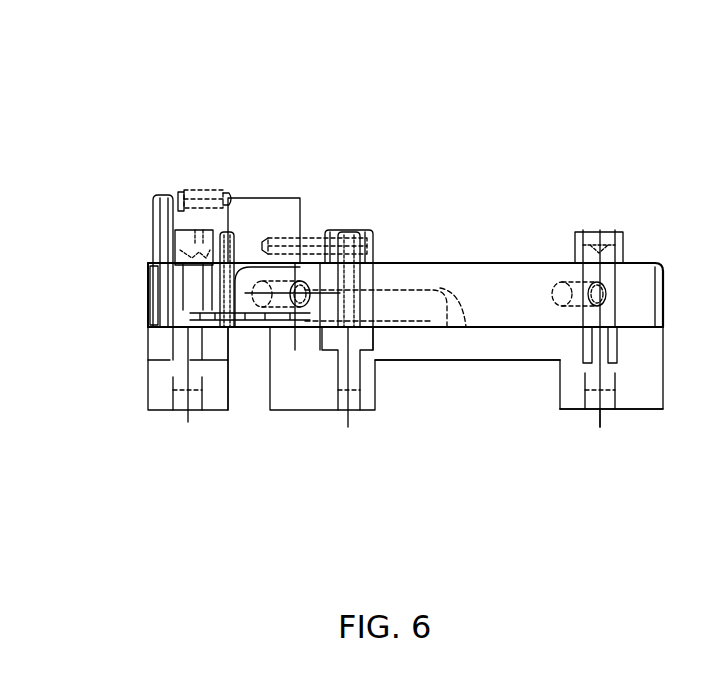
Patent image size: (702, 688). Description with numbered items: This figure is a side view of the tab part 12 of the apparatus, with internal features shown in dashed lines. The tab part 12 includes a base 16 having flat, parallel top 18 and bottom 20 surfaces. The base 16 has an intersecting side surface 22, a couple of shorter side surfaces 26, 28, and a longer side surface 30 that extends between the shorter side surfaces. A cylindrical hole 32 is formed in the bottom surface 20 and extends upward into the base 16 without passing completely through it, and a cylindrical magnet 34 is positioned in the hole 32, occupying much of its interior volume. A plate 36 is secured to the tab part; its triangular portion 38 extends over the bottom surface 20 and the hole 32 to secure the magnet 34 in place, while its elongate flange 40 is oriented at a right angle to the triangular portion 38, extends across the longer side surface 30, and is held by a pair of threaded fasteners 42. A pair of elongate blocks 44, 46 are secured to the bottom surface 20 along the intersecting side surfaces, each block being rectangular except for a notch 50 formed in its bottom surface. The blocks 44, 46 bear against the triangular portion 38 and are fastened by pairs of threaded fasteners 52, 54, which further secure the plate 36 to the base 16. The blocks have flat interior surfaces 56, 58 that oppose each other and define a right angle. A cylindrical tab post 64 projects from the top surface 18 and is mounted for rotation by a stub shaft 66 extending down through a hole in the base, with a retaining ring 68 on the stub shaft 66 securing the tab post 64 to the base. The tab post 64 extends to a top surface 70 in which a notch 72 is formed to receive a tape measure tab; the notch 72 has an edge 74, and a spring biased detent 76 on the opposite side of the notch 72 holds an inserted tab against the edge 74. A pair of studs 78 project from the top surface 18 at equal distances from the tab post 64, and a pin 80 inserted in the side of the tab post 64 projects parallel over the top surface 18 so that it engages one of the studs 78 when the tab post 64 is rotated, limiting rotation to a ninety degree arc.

The tab part 12 is at (415, 185).
The base 16 is at (505, 262).
The top surface 18 is at (428, 262).
The bottom surface 20 is at (498, 328).
The side surface 22 is at (148, 318).
The shorter side surface 26 is at (148, 299).
The shorter side surface 28 is at (666, 280).
The longer side surface 30 is at (642, 263).
The cylindrical hole 32 is at (466, 327).
The cylindrical magnet 34 is at (447, 327).
The plate 36 is at (530, 333).
The triangular portion 38 is at (548, 330).
The elongate flange 40 is at (631, 315).
The threaded fasteners 42 is at (316, 238).
The elongate block 44 is at (148, 394).
The elongate block 46 is at (663, 409).
The notch 50 is at (407, 387).
The threaded fasteners 52 is at (172, 217).
The threaded fasteners 54 is at (362, 232).
The interior surface 56 is at (228, 398).
The interior surface 58 is at (643, 397).
The tab post 64 is at (177, 238).
The stub shaft 66 is at (203, 290).
The retaining ring 68 is at (168, 330).
The top surface 70 is at (177, 200).
The notch 72 is at (230, 186).
The edge 74 is at (228, 200).
The spring biased detent 76 is at (227, 195).
The studs 78 is at (238, 232).
The pin 80 is at (336, 230).